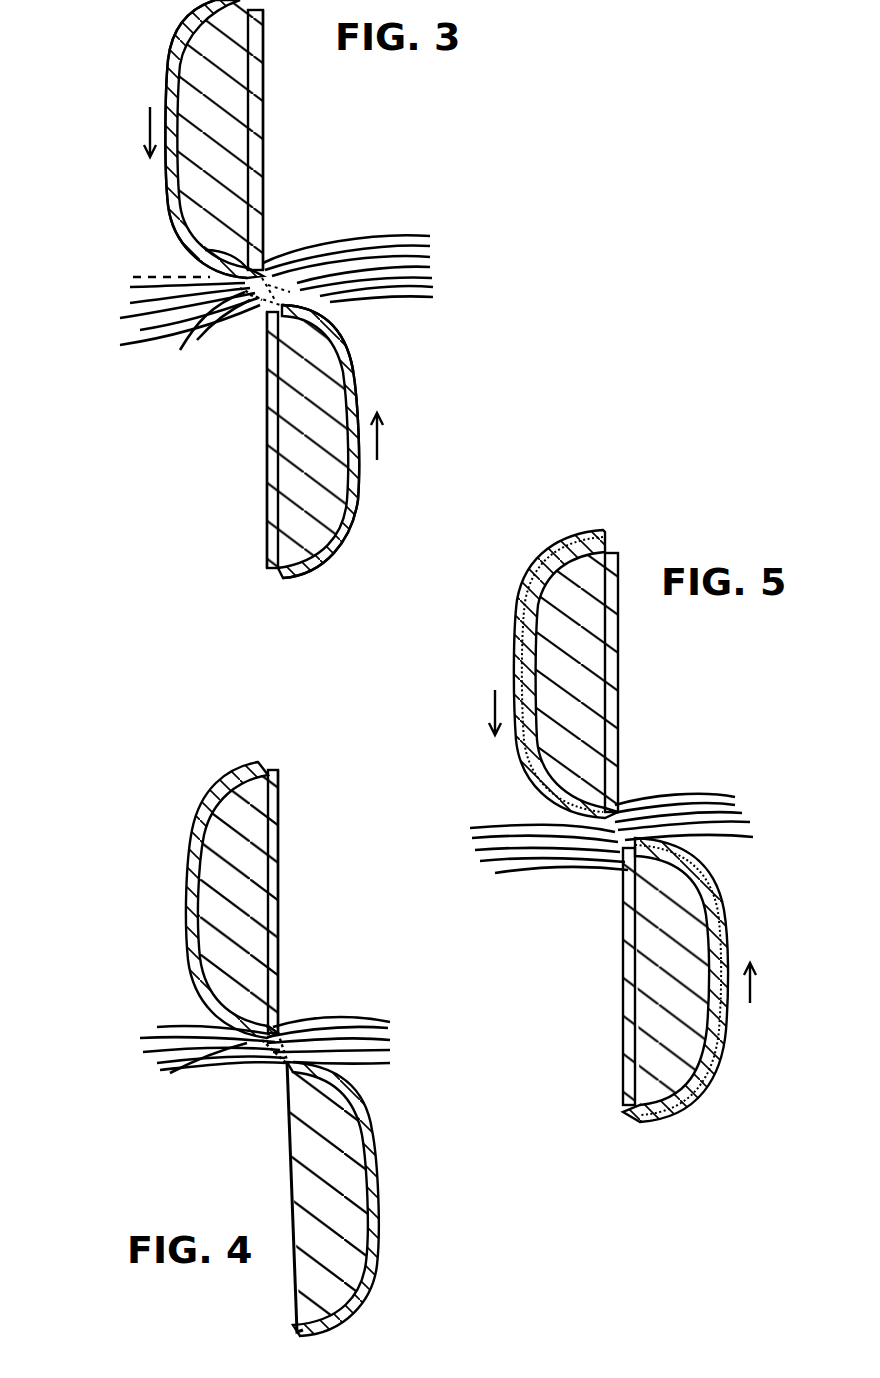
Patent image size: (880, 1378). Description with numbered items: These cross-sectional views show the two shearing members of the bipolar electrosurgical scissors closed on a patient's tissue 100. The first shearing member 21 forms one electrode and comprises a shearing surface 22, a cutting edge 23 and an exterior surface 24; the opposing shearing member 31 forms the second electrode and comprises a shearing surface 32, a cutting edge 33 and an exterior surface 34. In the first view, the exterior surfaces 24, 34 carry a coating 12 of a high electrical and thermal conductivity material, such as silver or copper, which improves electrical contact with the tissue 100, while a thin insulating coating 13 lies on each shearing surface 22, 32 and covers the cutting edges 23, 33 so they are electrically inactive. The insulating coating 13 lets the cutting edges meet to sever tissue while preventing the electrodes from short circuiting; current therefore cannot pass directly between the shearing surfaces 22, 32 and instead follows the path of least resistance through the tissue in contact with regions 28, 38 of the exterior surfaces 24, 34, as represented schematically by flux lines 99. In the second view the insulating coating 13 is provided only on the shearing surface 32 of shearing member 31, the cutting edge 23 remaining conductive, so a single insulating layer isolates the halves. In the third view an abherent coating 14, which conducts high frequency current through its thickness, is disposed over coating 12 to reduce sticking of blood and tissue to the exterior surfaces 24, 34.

In FIG. 3, the coating 12 is at (167, 190).
In FIG. 4, the coating 12 is at (188, 850).
In FIG. 5, the coating 12 is at (537, 615).
In FIG. 3, the insulating coating 13 is at (265, 118).
In FIG. 4, the insulating coating 13 is at (278, 808).
In FIG. 5, the insulating coating 13 is at (620, 672).
In FIG. 5, the abherent coating 14 is at (513, 663).
In FIG. 3, the first shearing member 21 is at (323, 520).
In FIG. 4, the first shearing member 21 is at (343, 1182).
In FIG. 5, the first shearing member 21 is at (655, 1053).
In FIG. 3, the shearing surface 22 is at (268, 433).
In FIG. 4, the shearing surface 22 is at (295, 1293).
In FIG. 3, the cutting edge 23 is at (335, 352).
In FIG. 3, the exterior surface 24 is at (348, 416).
In FIG. 3, the region 28 is at (297, 287).
In FIG. 4, the region 28 is at (308, 1040).
In FIG. 3, the shearing member 31 is at (205, 42).
In FIG. 4, the shearing member 31 is at (210, 902).
In FIG. 5, the shearing member 31 is at (572, 592).
In FIG. 3, the shearing surface 32 is at (260, 180).
In FIG. 4, the shearing surface 32 is at (282, 857).
In FIG. 3, the cutting edge 33 is at (210, 245).
In FIG. 3, the exterior surface 34 is at (187, 73).
In FIG. 3, the region 38 is at (245, 312).
In FIG. 4, the region 38 is at (282, 1063).
In FIG. 3, the flux lines 99 is at (215, 290).
In FIG. 4, the flux lines 99 is at (240, 1052).
In FIG. 3, the tissue 100 is at (387, 253).
In FIG. 4, the tissue 100 is at (367, 1030).
In FIG. 5, the tissue 100 is at (717, 800).